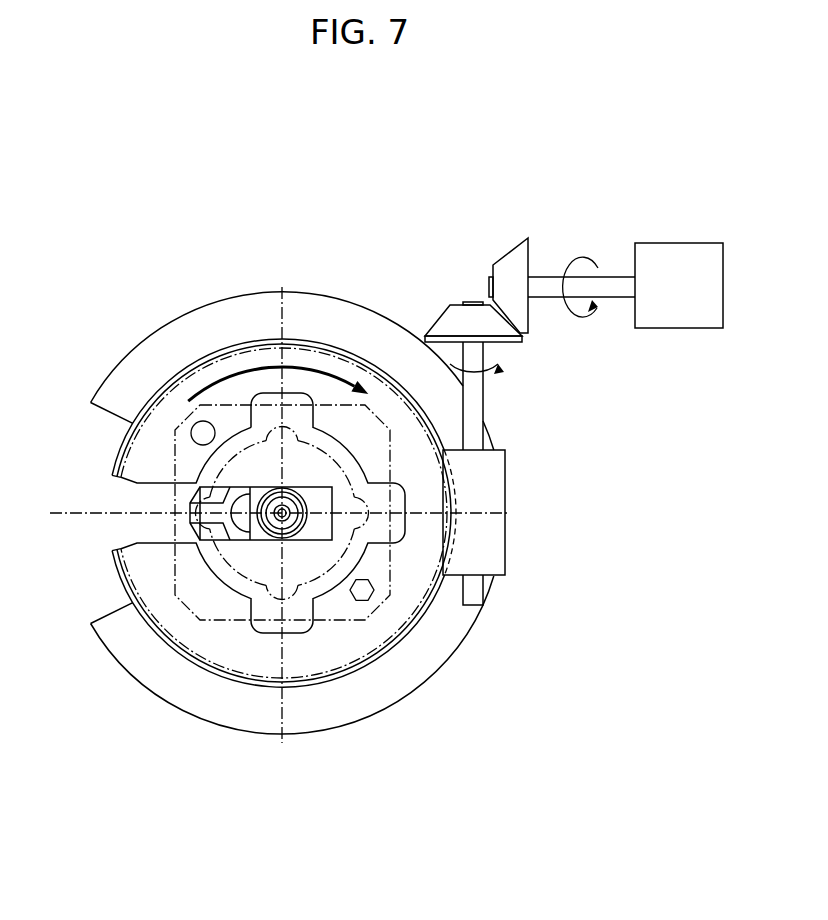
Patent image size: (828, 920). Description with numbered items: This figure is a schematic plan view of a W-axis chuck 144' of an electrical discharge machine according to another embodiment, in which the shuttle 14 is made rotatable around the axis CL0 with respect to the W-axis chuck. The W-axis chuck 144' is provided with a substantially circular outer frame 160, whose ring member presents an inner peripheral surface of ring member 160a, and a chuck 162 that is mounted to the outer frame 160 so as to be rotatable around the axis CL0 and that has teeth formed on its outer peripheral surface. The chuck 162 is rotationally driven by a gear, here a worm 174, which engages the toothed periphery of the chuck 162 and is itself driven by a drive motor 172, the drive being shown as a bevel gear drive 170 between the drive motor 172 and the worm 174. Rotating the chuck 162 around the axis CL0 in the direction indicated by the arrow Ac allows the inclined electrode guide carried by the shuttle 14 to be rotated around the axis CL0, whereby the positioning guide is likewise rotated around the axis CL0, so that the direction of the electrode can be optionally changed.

The W-axis chuck 144' is at (381, 471).
The outer frame 160 is at (205, 316).
The inner peripheral surface of ring member 160a is at (403, 633).
The chuck 162 is at (385, 407).
The arrow Ac is at (247, 352).
The shuttle 14 is at (177, 597).
The axis CL0 is at (282, 513).
The bevel gear drive 170 is at (501, 222).
The drive motor 172 is at (673, 243).
The worm 174 is at (493, 483).